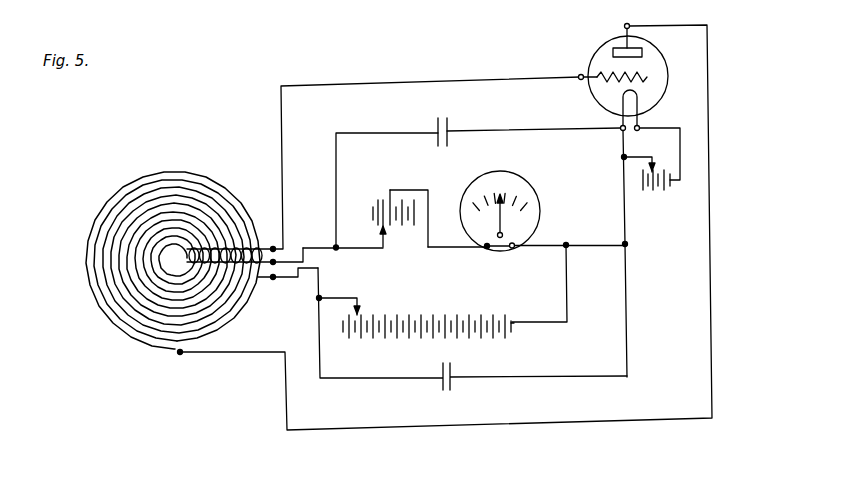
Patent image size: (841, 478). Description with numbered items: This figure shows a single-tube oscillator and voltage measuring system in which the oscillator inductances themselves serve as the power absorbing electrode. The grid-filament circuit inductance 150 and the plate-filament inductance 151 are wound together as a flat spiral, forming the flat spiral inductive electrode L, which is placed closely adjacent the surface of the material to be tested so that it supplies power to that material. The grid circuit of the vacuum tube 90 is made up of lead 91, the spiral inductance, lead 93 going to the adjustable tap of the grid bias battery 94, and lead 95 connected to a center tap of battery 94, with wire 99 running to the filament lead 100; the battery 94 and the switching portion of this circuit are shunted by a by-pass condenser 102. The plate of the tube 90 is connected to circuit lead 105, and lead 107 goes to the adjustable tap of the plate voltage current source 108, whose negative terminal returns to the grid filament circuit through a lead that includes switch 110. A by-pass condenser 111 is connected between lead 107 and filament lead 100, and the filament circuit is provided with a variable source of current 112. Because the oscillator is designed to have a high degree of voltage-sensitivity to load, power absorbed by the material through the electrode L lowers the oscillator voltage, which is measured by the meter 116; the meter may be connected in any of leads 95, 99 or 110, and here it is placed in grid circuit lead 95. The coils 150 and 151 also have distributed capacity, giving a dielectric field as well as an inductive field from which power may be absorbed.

The flat spiral inductive electrode L is at (85, 230).
The grid-filament circuit inductance 150 is at (216, 151).
The plate-filament inductance 151 is at (142, 172).
The lead 91 is at (383, 80).
The vacuum tube 90 is at (597, 49).
The circuit lead 105 is at (712, 198).
The by-pass condenser 102 is at (451, 120).
The lead 93 is at (355, 248).
The grid bias battery 94 is at (371, 206).
The lead 95 is at (437, 248).
The meter 116 is at (538, 198).
The wire 99 is at (607, 240).
The filament lead 100 is at (628, 222).
The variable source of current 112 is at (667, 191).
The switch 110 is at (568, 297).
The plate voltage current source 108 is at (443, 315).
The lead 107 is at (347, 296).
The by-pass condenser 111 is at (455, 390).